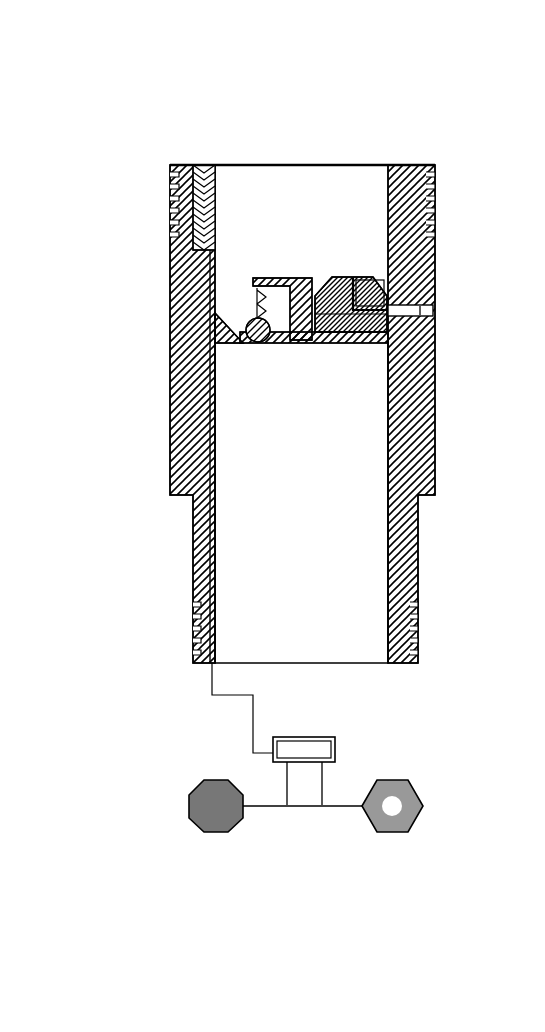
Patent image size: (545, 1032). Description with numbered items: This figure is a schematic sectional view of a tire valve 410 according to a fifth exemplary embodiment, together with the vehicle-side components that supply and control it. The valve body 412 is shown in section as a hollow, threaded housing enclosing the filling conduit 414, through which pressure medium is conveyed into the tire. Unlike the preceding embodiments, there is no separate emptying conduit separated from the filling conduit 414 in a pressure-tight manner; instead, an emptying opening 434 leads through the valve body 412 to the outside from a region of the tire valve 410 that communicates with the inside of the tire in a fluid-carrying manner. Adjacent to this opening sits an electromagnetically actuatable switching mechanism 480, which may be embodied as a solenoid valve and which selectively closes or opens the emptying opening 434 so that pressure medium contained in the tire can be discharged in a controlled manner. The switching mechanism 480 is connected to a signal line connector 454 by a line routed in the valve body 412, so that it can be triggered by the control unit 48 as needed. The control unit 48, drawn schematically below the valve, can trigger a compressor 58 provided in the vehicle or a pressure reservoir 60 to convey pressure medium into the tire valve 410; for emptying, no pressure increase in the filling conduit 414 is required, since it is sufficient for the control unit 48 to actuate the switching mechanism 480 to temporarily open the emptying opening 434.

The tire valve 410 is at (138, 134).
The valve body 412 is at (422, 473).
The filling conduit 414 is at (311, 523).
The emptying opening 434 is at (430, 302).
The electromagnetically actuatable switching mechanism 480 is at (338, 268).
The signal line connector 454 is at (210, 664).
The control unit 48 is at (325, 737).
The compressor 58 is at (236, 825).
The pressure reservoir 60 is at (418, 823).